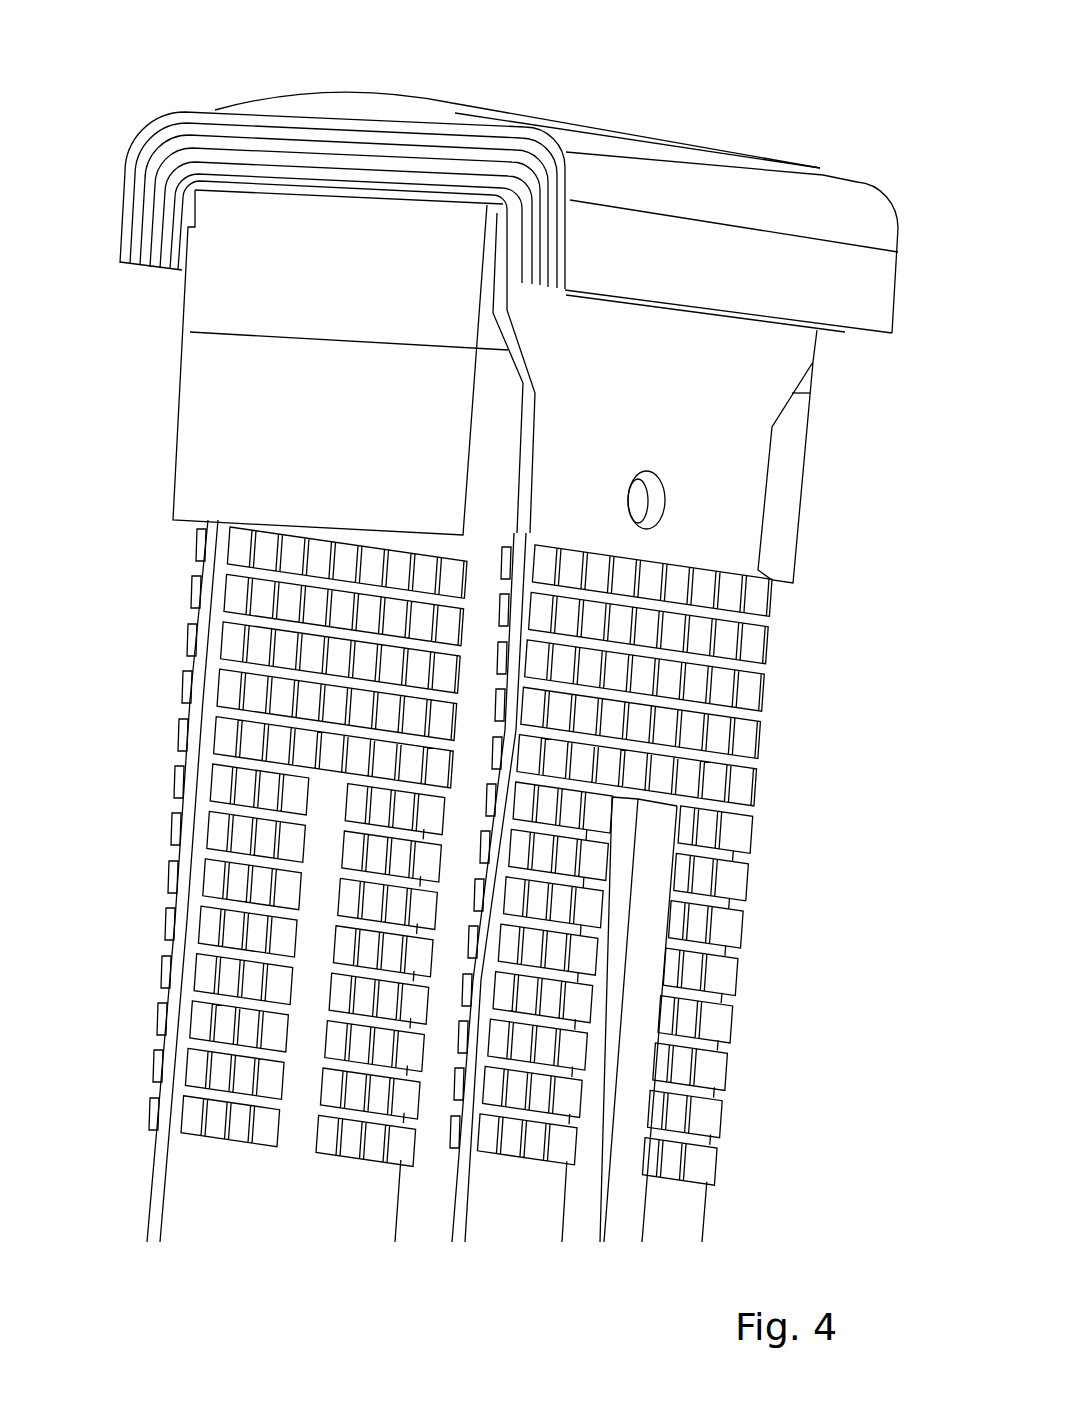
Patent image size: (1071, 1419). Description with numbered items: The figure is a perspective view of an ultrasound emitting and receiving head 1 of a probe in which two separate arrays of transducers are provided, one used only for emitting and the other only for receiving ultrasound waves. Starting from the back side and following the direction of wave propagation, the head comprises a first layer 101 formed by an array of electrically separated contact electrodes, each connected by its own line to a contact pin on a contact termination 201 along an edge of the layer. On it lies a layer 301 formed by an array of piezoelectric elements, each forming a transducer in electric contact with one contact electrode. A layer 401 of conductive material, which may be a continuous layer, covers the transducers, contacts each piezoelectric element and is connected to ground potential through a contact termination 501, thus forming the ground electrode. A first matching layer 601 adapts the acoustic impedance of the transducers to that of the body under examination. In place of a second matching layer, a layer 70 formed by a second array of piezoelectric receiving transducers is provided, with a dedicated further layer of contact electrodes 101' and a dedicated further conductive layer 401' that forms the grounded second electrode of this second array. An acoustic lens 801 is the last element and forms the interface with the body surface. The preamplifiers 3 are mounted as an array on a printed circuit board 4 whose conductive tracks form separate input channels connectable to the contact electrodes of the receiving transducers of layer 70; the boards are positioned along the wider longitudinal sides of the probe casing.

The ultrasound emitting and receiving head 1 is at (334, 82).
The first layer of contact electrodes 101 is at (340, 362).
The further layer of contact electrodes 101' is at (345, 153).
The contact termination 201 is at (532, 257).
The layer of piezoelectric elements 301 is at (270, 182).
The layer of conductive material 401 is at (346, 225).
The further layer of electric conductive material 401' is at (408, 168).
The contact termination 501 is at (522, 268).
The matching layer 601 is at (295, 157).
The layer of piezoelectric elements 70 is at (458, 145).
The acoustic lens 801 is at (635, 132).
The preamplifiers 3 is at (230, 687).
The printed circuit board 4 is at (165, 1032).